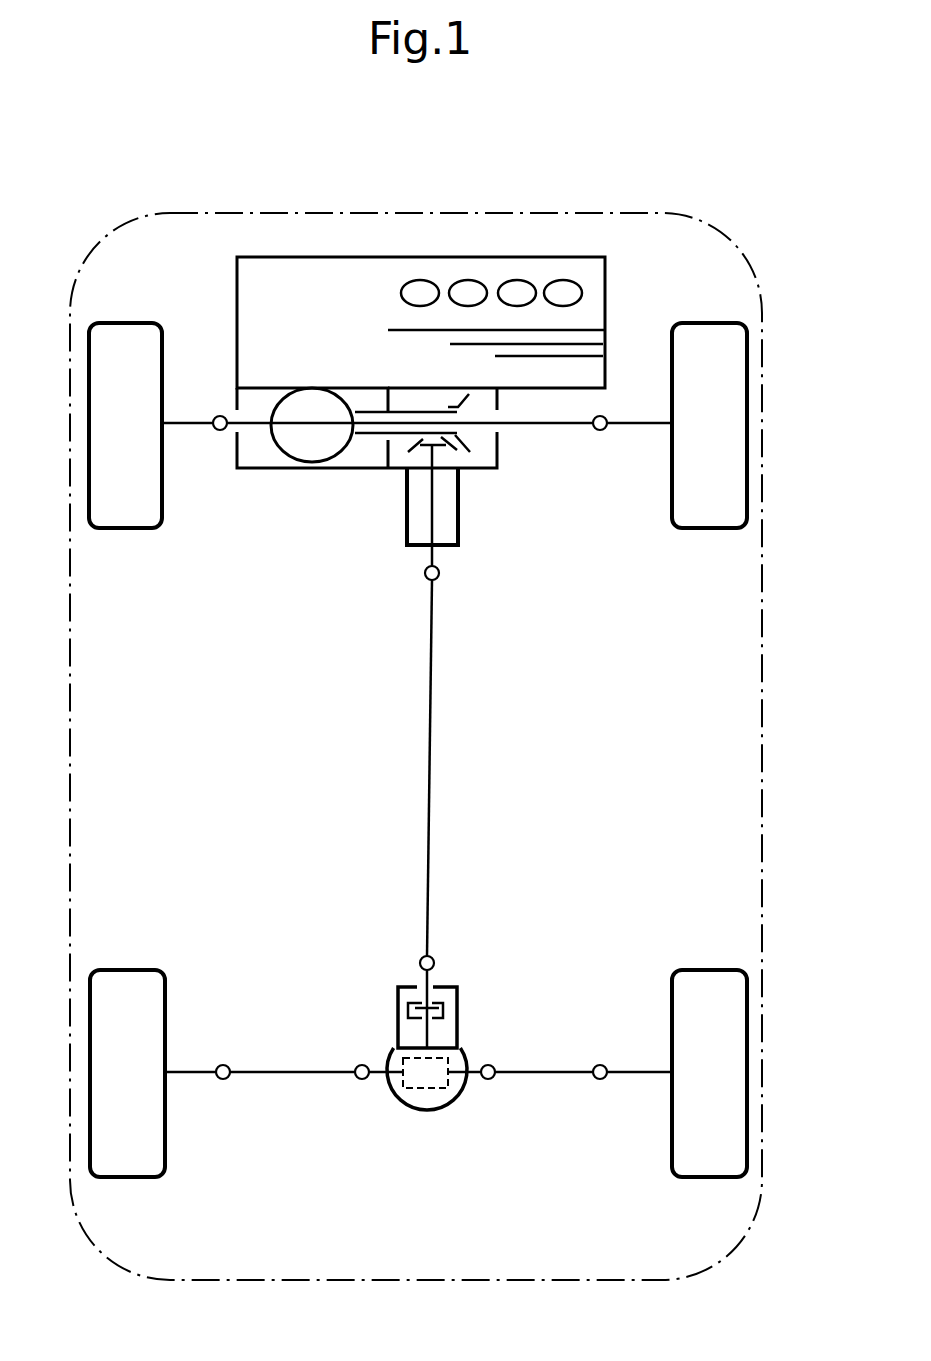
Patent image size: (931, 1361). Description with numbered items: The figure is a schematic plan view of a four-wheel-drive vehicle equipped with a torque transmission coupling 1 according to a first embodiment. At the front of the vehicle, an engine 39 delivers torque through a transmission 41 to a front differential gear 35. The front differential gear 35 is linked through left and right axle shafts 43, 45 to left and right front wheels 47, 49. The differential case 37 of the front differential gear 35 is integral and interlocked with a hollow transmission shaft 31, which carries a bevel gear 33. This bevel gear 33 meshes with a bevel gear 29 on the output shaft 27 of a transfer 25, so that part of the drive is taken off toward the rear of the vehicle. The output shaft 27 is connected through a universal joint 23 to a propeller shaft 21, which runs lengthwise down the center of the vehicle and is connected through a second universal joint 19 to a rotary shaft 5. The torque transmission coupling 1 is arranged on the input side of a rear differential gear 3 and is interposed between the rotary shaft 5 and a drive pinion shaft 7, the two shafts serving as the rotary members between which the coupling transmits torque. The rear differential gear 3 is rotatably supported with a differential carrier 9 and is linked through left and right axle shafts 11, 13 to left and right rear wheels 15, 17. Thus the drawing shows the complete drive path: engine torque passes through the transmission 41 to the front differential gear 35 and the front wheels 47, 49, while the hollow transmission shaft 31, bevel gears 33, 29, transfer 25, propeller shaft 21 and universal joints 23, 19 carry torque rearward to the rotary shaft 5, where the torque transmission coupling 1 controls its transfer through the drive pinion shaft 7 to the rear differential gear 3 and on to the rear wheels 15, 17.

The torque transmission coupling 1 is at (442, 1053).
The rear differential gear 3 is at (415, 1090).
The rotary shaft 5 is at (418, 983).
The drive pinion shaft 7 is at (423, 1037).
The differential carrier 9 is at (460, 1093).
The left axle shaft 11 is at (258, 1071).
The right axle shaft 13 is at (563, 1071).
The left rear wheel 15 is at (128, 969).
The right rear wheel 17 is at (709, 969).
The universal joint 19 is at (435, 958).
The propeller shaft 21 is at (431, 772).
The universal joint 23 is at (440, 576).
The transfer 25 is at (446, 521).
The output shaft 27 is at (431, 510).
The bevel gear 29 is at (414, 440).
The hollow transmission shaft 31 is at (375, 438).
The bevel gear 33 is at (470, 450).
The front differential gear 35 is at (388, 503).
The differential case 37 is at (302, 458).
The engine 39 is at (518, 257).
The transmission 41 is at (316, 257).
The left axle shaft 43 is at (236, 414).
The right axle shaft 45 is at (581, 418).
The left front wheel 47 is at (125, 323).
The right front wheel 49 is at (707, 323).